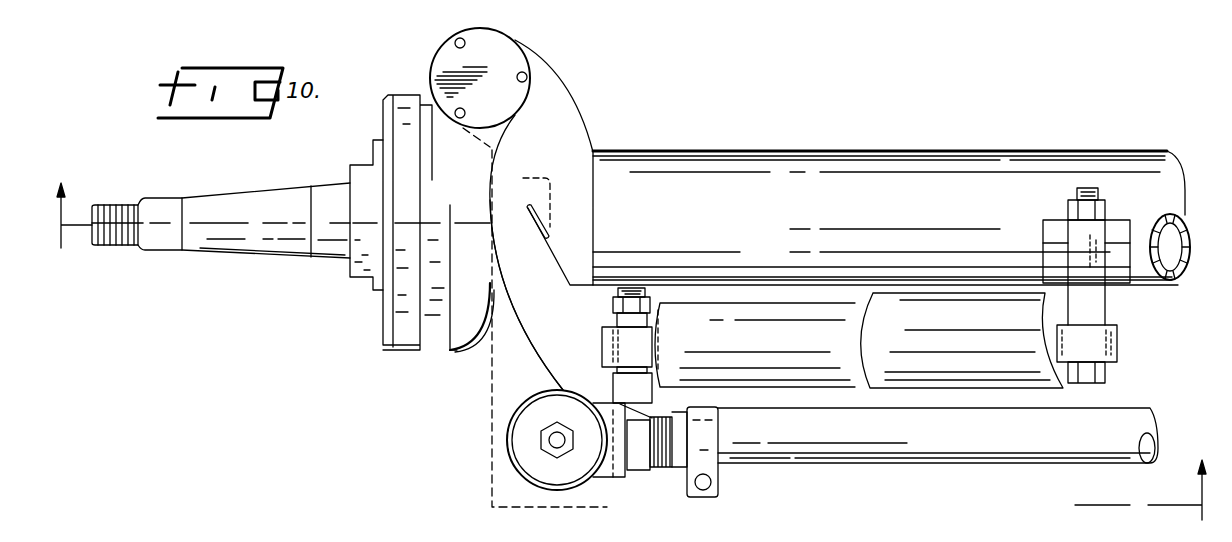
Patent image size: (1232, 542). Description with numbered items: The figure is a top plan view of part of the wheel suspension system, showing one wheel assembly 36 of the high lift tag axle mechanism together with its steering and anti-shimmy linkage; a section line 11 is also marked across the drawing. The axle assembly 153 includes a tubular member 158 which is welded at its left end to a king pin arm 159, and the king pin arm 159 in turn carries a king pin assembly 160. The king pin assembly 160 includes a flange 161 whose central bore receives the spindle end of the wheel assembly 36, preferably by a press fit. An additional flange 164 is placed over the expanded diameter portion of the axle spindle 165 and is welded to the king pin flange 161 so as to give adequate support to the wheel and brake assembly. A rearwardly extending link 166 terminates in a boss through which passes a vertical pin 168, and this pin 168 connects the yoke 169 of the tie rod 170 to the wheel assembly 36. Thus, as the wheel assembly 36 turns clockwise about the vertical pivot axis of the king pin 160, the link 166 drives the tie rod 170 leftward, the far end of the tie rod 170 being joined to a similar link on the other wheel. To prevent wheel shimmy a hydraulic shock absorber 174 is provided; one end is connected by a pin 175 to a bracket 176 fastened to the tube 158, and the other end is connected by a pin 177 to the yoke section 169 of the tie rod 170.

The section line 11- 11 is at (633, 362).
The wheel assembly 36 is at (232, 283).
The axle assembly 153 is at (972, 108).
The tubular member 158 is at (1173, 162).
The king pin arm 159 is at (578, 128).
The king pin assembly 160 is at (541, 54).
The flange 161 is at (440, 353).
The additional flange 164 is at (397, 322).
The axle spindle 165 is at (237, 197).
The link 166 is at (503, 380).
The vertical pin 168 is at (543, 440).
The yoke 169 is at (603, 470).
The tie rod 170 is at (1150, 410).
The hydraulic shock absorber 174 is at (1033, 388).
The pin 175 is at (1103, 318).
The bracket 176 is at (1118, 228).
The pin 177 is at (620, 387).